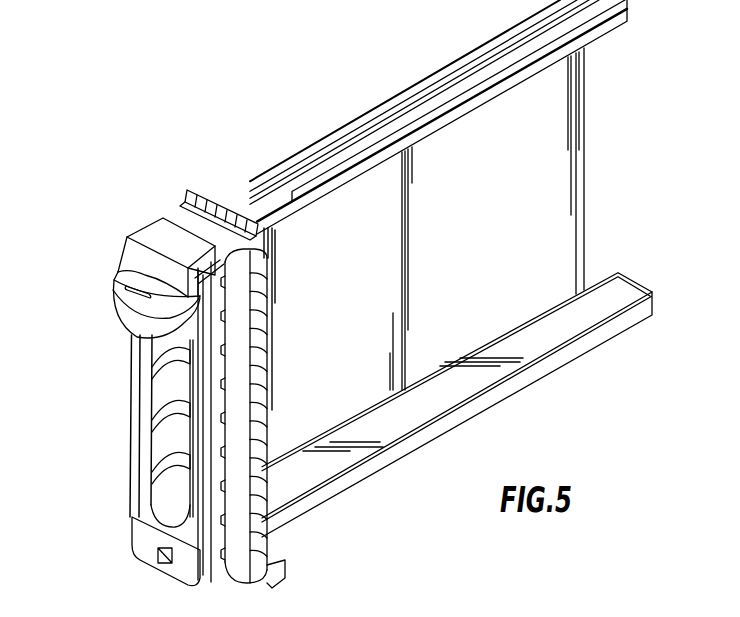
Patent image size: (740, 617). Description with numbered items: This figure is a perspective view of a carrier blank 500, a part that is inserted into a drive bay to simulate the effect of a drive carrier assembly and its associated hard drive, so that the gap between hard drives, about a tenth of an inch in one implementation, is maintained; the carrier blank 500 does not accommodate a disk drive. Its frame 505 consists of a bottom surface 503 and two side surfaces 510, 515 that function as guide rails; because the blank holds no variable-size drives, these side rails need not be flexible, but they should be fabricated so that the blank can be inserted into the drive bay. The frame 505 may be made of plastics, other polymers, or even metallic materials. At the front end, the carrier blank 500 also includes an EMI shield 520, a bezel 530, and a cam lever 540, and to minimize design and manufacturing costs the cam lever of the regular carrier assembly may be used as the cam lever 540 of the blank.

The carrier blank 500 is at (152, 60).
The bottom surface 503 is at (540, 139).
The frame 505 is at (532, 211).
The side surface 510 is at (463, 77).
The side surface 515 is at (537, 343).
The EMI shield 520 is at (191, 195).
The bezel 530 is at (155, 236).
The cam lever 540 is at (132, 423).